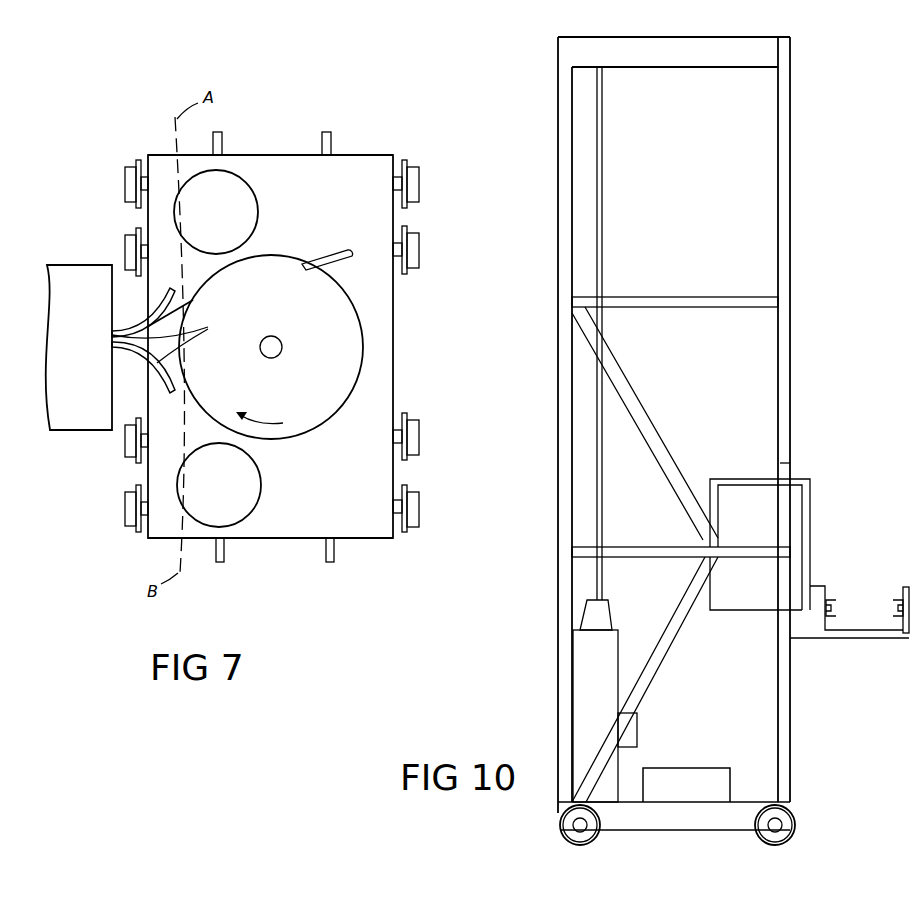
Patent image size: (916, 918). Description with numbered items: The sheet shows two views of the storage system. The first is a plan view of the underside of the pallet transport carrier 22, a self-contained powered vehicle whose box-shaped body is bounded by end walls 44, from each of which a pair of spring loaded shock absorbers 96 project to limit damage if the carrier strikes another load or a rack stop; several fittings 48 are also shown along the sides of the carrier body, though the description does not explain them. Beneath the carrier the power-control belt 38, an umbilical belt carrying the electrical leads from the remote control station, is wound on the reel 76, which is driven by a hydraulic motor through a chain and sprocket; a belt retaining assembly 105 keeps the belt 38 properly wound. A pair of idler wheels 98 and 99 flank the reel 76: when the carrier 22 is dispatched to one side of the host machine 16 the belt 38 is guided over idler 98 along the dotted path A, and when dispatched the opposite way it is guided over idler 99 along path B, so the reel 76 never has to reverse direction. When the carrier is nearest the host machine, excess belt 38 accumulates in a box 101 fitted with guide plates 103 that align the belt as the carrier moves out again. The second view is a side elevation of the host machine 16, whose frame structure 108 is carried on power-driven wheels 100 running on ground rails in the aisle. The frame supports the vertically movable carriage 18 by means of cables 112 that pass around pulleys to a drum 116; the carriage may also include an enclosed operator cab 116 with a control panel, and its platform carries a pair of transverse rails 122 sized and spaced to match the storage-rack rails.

In FIG. 7, the pallet transport carrier 22 is at (410, 335).
In FIG. 7, the end wall 44 is at (262, 154).
In FIG. 7, the spring loaded shock absorber 96 is at (222, 131).
In FIG. 7, the clamp 48 is at (125, 247).
In FIG. 7, the idler wheel 98 is at (258, 209).
In FIG. 7, the idler wheel 99 is at (262, 488).
In FIG. 7, the reel 76 is at (333, 424).
In FIG. 7, the belt retaining assembly 105 is at (328, 258).
In FIG. 7, the box 101 is at (97, 294).
In FIG. 7, the power-control belt 38 is at (184, 305).
In FIG. 7, the guide plate 103 is at (177, 340).
In FIG. 10, the host machine 16 is at (824, 250).
In FIG. 10, the cable 112 is at (602, 208).
In FIG. 10, the carriage 18 is at (836, 480).
In FIG. 10, the enclosed cab 116 is at (756, 594).
In FIG. 10, the rail 122 is at (893, 600).
In FIG. 10, the frame structure 108 is at (680, 830).
In FIG. 10, the wheel 100 is at (565, 836).